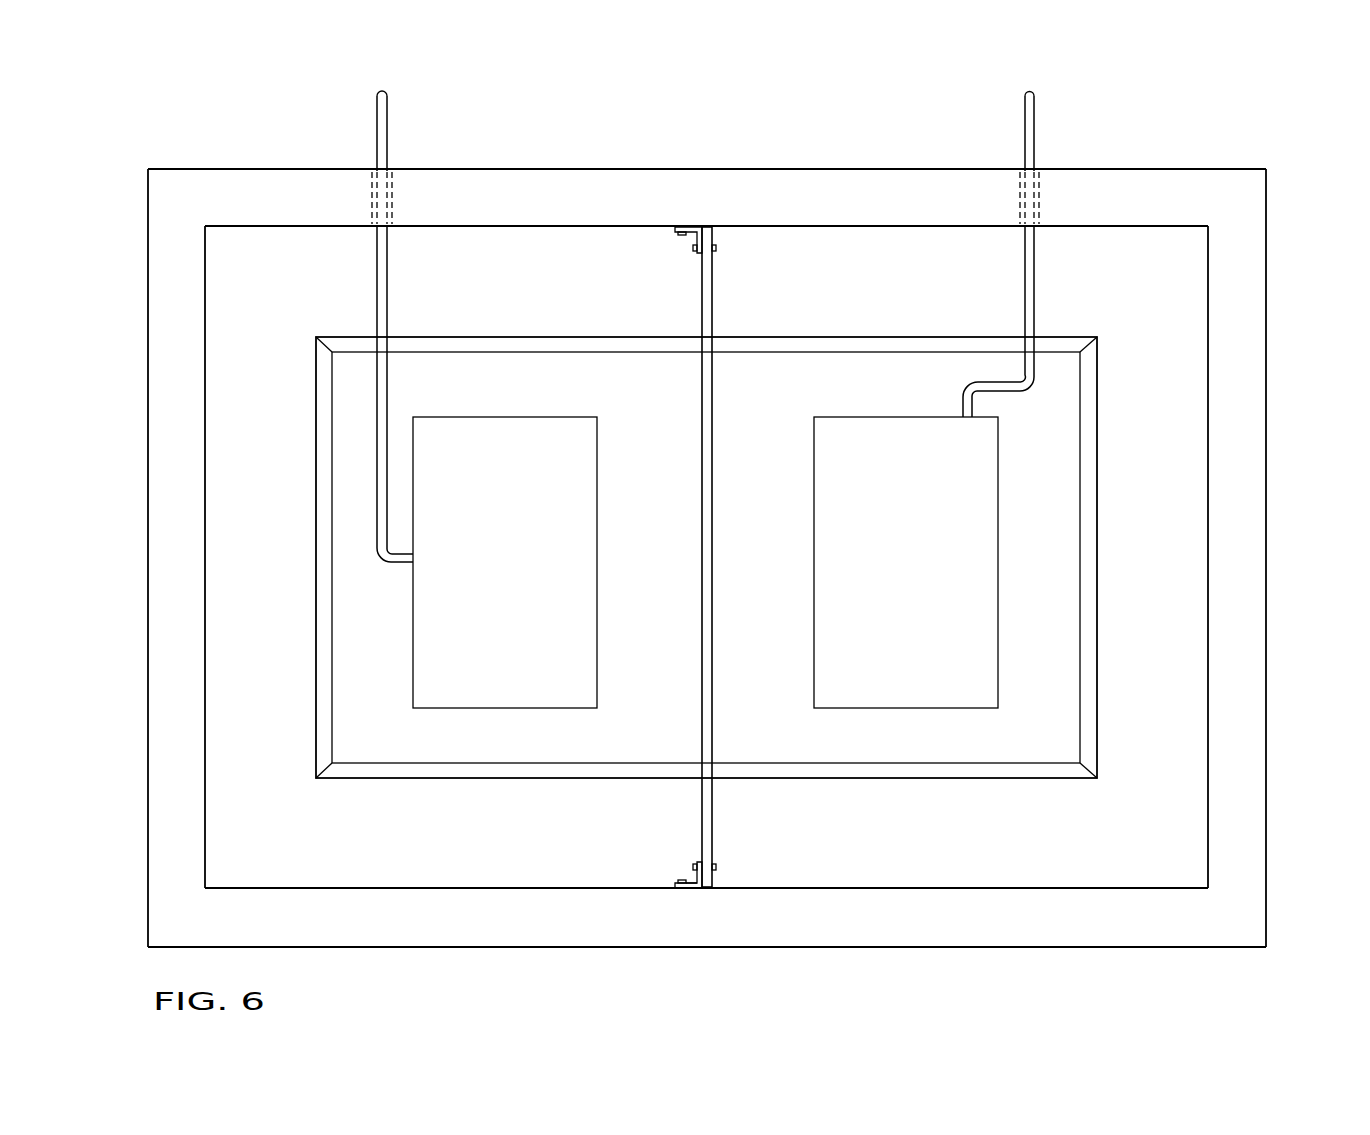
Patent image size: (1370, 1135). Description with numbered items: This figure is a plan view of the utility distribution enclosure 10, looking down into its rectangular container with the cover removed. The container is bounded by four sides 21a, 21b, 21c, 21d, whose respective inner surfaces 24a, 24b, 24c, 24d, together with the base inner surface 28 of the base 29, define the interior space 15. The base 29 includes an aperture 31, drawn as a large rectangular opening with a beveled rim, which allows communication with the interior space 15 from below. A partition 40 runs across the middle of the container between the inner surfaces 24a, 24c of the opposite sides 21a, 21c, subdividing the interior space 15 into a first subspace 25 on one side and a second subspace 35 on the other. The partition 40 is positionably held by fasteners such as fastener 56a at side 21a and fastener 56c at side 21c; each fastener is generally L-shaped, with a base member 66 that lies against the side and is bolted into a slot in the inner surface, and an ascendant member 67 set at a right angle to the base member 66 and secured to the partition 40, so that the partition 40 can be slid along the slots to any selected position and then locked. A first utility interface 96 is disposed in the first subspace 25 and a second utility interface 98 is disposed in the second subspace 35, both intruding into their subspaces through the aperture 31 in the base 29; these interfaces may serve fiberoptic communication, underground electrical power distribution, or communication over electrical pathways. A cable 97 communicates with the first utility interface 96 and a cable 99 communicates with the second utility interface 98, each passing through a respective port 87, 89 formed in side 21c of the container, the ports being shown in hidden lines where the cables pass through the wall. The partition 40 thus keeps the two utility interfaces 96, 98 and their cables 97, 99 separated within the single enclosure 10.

The utility distribution enclosure 10 is at (1304, 196).
The interior space 15 is at (527, 296).
The side 21a is at (960, 935).
The side 21b is at (148, 632).
The side 21c is at (865, 178).
The side 21d is at (1266, 633).
The inner surface 24a is at (307, 888).
The inner surface 24b is at (205, 800).
The inner surface 24c is at (322, 226).
The inner surface 24d is at (1208, 490).
The first subspace 25 is at (437, 846).
The base inner surface 28 is at (1145, 280).
The base 29 is at (1108, 830).
The aperture 31 is at (568, 735).
The second subspace 35 is at (1137, 743).
The partition 40 is at (702, 553).
The fastener 56a is at (678, 888).
The fastener 56c is at (691, 227).
The base member 66 is at (694, 888).
The ascendant member 67 is at (697, 878).
The port 87 is at (395, 196).
The port 89 is at (1018, 196).
The first utility interface 96 is at (413, 655).
The cable 97 is at (404, 562).
The second utility interface 98 is at (998, 655).
The cable 99 is at (1034, 281).